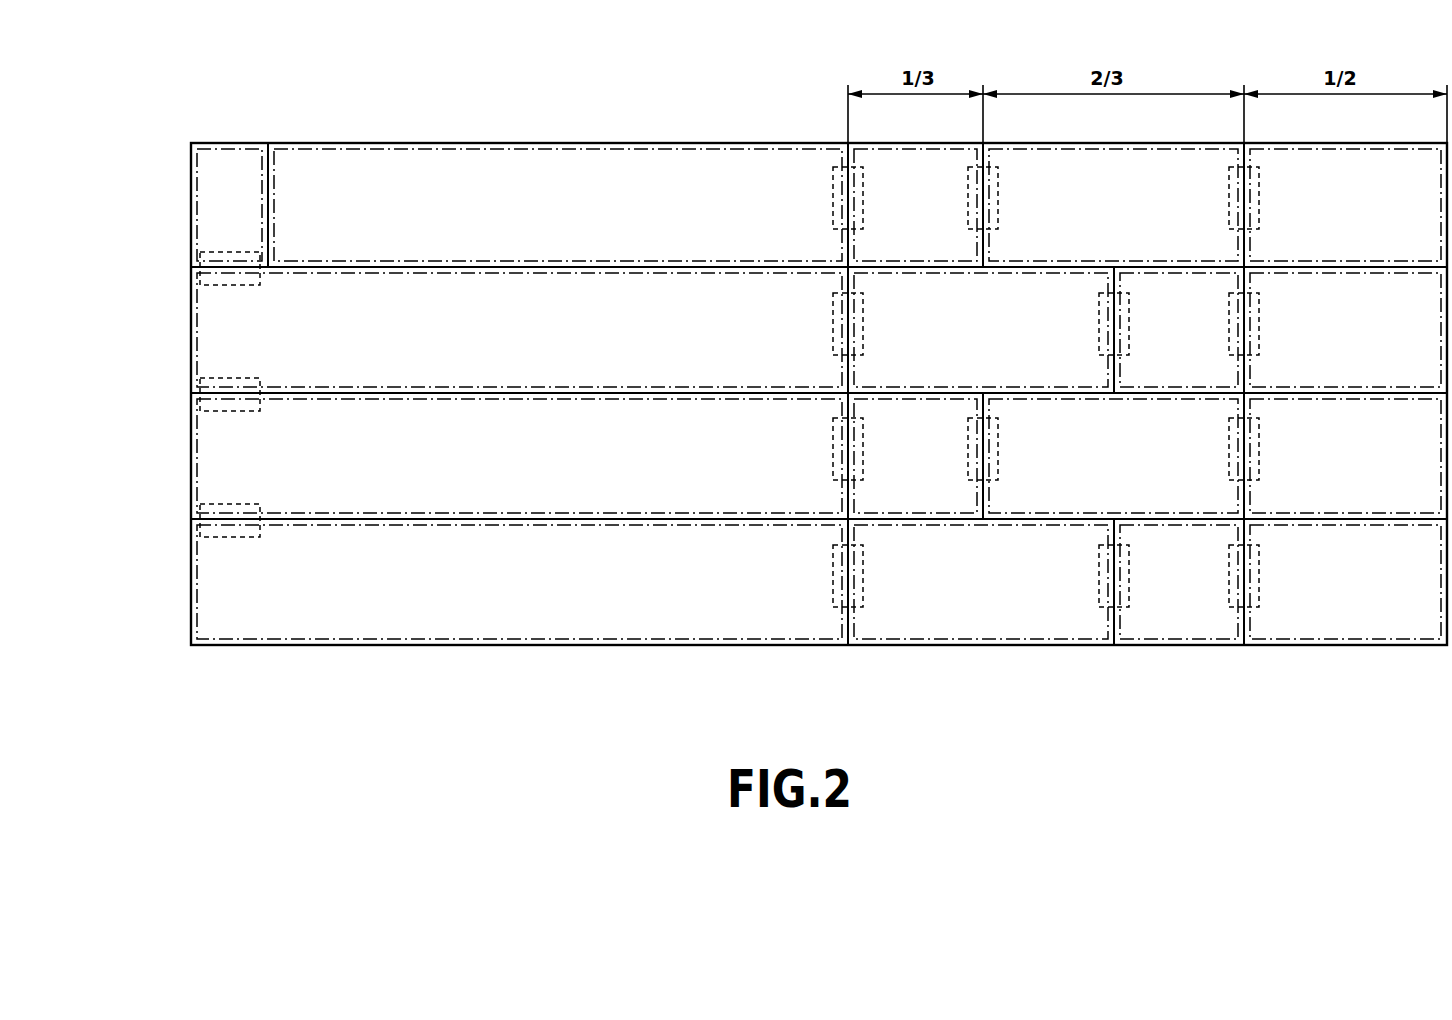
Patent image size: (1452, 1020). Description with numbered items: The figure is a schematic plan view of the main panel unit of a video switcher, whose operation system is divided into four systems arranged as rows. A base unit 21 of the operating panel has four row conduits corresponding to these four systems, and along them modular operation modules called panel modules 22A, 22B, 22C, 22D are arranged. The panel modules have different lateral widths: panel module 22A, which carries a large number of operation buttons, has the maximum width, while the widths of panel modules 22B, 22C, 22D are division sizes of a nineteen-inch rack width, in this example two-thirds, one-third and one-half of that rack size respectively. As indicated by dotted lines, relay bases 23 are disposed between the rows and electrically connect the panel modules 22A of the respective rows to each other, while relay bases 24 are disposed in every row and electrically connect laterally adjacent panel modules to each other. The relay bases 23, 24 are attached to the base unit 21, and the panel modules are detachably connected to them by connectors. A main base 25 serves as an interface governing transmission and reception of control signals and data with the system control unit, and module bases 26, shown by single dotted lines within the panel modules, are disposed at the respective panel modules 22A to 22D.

The base unit 21 is at (641, 652).
The panel module 22A is at (515, 648).
The panel module 22B is at (988, 648).
The panel module 22C is at (1185, 648).
The panel module 22D is at (1348, 648).
The relay base 23 is at (215, 285).
The relay base 24 is at (863, 213).
The main base 25 is at (232, 158).
The module base 26 is at (484, 158).